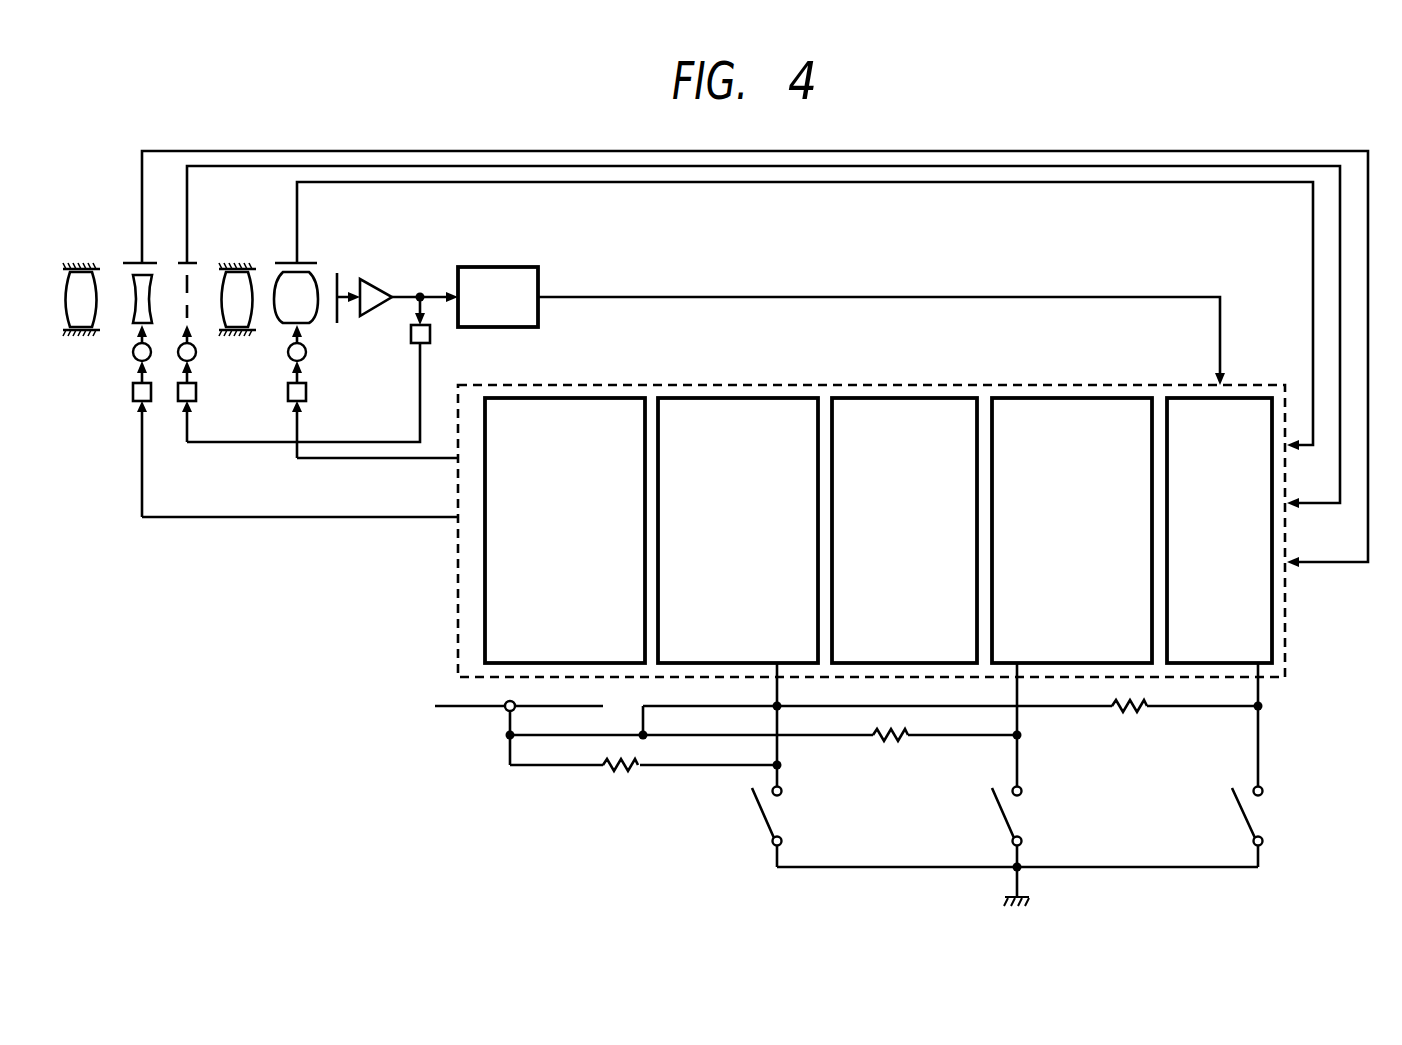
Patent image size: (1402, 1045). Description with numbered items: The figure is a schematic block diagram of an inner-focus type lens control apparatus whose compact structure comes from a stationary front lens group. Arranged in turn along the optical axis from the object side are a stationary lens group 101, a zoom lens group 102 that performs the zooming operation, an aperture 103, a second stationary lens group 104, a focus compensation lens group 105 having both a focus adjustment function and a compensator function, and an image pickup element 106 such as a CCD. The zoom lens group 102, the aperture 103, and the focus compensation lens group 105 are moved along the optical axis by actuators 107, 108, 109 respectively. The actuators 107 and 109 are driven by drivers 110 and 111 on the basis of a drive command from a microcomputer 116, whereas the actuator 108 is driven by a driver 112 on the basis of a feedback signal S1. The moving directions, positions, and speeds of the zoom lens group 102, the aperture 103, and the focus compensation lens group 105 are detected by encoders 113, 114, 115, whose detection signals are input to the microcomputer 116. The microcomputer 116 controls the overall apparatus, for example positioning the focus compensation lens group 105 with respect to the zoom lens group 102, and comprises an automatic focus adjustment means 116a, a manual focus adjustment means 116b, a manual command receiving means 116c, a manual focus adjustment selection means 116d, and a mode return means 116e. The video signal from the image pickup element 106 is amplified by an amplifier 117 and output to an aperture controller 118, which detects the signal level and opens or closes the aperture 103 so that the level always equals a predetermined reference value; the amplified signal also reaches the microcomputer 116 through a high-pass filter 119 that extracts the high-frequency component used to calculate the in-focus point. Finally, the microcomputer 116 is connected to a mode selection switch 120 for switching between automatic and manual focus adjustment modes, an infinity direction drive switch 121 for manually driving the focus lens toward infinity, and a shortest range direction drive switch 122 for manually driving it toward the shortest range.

The stationary lens group 101 is at (80, 265).
The zoom lens group 102 is at (138, 295).
The aperture 103 is at (184, 282).
The stationary lens group 104 is at (238, 267).
The focus compensation lens group 105 is at (317, 283).
The image pickup element 106 is at (350, 287).
The actuator 107 is at (133, 357).
The actuator 108 is at (197, 353).
The actuator 109 is at (307, 356).
The driver 110 is at (152, 400).
The driver 111 is at (306, 393).
The driver 112 is at (197, 393).
The encoder 113 is at (133, 262).
The encoder 114 is at (193, 262).
The encoder 115 is at (291, 262).
The microcomputer 116 is at (1249, 385).
The automatic focus adjustment means 116a is at (611, 397).
The manual focus adjustment means 116b is at (788, 397).
The manual command receiving means 116c is at (948, 397).
The manual focus adjustment selection means 116d is at (1113, 397).
The mode return means 116e is at (1273, 657).
The amplifier 117 is at (384, 290).
The aperture controller 118 is at (410, 334).
The high-pass filter 119 is at (528, 267).
The mode selection switch 120 is at (782, 817).
The ∞ direction drive switch 121 is at (1022, 817).
The shortest range direction drive switch 122 is at (1262, 817).
The feedback signal S1 is at (242, 445).